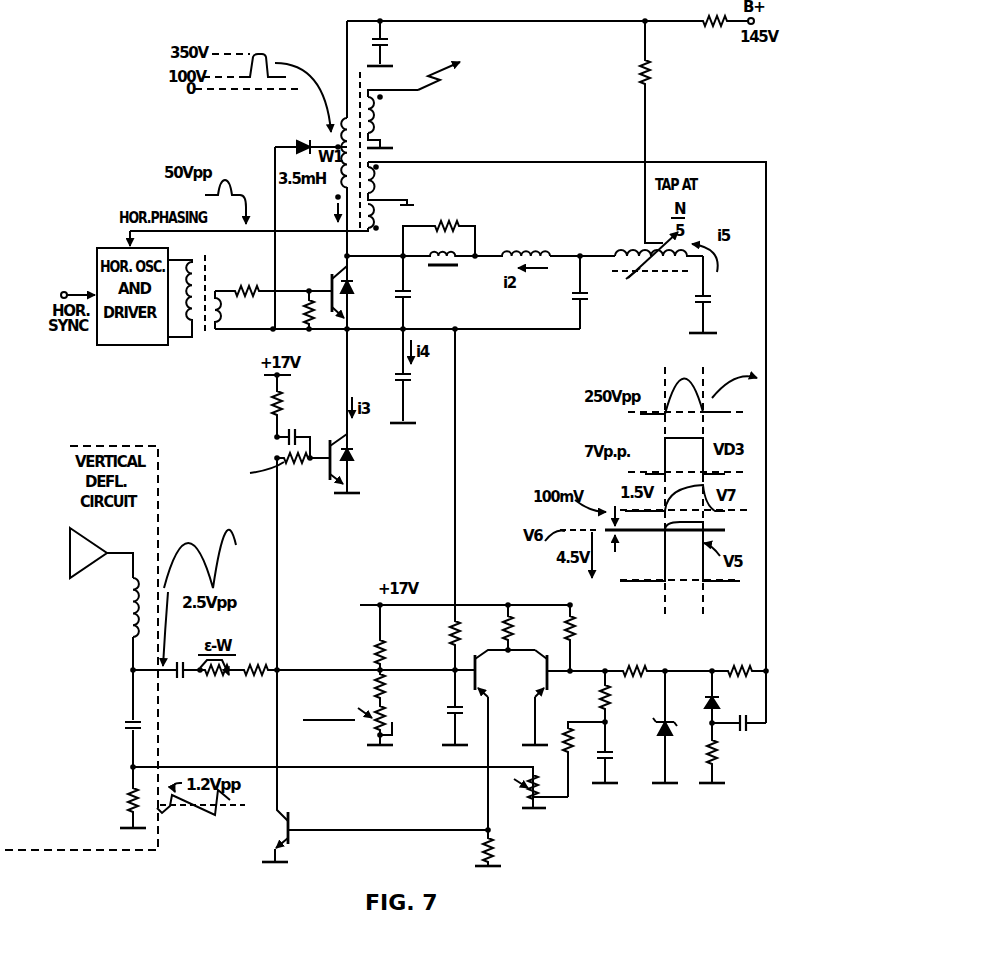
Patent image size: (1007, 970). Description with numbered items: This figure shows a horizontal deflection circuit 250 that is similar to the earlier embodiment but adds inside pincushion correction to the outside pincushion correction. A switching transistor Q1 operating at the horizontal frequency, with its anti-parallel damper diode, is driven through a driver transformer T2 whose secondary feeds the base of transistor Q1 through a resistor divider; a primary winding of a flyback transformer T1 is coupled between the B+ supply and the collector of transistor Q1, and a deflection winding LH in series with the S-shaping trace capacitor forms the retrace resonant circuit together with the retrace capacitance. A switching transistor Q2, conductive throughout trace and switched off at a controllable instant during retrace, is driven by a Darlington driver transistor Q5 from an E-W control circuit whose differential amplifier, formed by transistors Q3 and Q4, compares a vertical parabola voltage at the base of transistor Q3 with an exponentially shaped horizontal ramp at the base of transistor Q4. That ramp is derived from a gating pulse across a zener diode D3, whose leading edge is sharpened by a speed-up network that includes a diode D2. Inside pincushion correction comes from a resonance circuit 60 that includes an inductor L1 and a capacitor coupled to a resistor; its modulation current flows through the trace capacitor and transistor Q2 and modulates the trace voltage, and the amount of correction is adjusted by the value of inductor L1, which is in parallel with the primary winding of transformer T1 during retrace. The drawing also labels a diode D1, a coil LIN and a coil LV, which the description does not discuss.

The resonance circuit 60 is at (615, 329).
The horizontal deflection circuit 250 is at (333, 610).
The diode BA159 D1 is at (298, 126).
The flyback transformer T1 is at (390, 138).
The driver transformer T2 is at (194, 284).
The switching transistor Q1 is at (363, 292).
The switching transistor Q2 is at (356, 411).
The transistor Q3 is at (505, 740).
The transistor Q4 is at (535, 697).
The Darlington driver transistor Q5 is at (361, 814).
The inductor L1 is at (600, 299).
The deflection winding LH is at (516, 224).
The vertical deflection coil LV is at (101, 616).
The linearity coil LIN is at (441, 271).
The diode D2 is at (753, 697).
The zener diode D3 is at (678, 727).